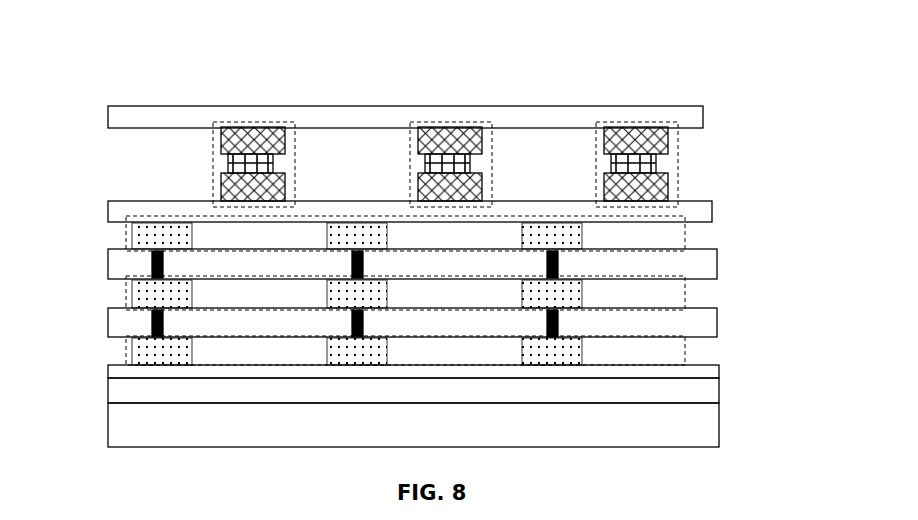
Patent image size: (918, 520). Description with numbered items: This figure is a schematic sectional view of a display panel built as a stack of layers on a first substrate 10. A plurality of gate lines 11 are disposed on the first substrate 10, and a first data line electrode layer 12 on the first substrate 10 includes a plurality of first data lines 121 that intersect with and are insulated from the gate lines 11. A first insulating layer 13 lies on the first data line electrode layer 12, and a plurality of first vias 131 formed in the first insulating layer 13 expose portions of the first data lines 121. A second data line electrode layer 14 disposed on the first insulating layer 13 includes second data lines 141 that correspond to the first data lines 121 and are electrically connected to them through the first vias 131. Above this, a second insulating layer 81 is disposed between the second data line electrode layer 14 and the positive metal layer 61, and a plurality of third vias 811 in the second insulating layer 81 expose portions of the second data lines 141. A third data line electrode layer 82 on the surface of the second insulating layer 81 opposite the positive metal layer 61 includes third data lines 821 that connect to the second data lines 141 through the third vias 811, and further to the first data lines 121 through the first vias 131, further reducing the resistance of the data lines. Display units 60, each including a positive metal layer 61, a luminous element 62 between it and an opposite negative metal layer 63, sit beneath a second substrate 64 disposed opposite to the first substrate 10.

The first substrate 10 is at (707, 423).
The gate lines 11 is at (707, 388).
The first data line electrode layer 12 is at (686, 355).
The first data lines 121 is at (150, 350).
The first insulating layer 13 is at (712, 321).
The first vias 131 is at (150, 327).
The second data line electrode layer 14 is at (686, 293).
The second data lines 141 is at (158, 290).
The second insulating layer 81 is at (702, 265).
The third vias 811 is at (150, 265).
The third data line electrode layer 82 is at (687, 235).
The third data lines 821 is at (140, 240).
The display units 60 is at (265, 122).
The positive metal layer 61 is at (665, 190).
The luminous element 62 is at (655, 163).
The negative metal layer 63 is at (665, 142).
The second substrate 64 is at (700, 116).